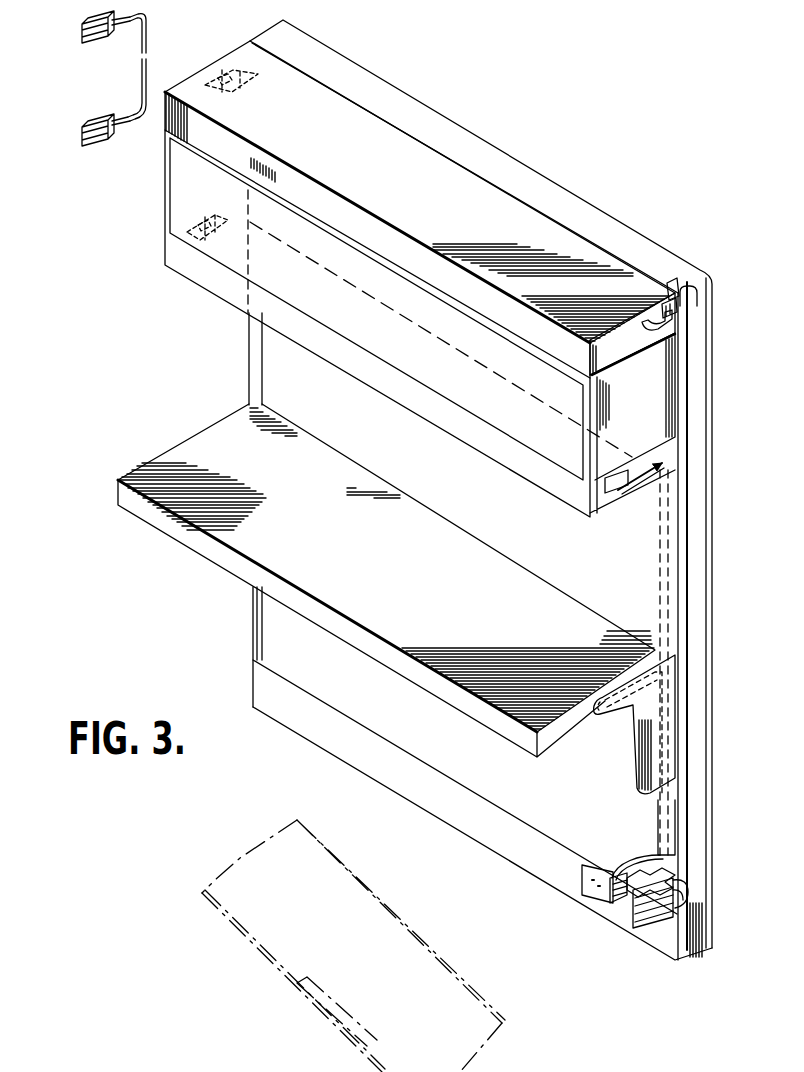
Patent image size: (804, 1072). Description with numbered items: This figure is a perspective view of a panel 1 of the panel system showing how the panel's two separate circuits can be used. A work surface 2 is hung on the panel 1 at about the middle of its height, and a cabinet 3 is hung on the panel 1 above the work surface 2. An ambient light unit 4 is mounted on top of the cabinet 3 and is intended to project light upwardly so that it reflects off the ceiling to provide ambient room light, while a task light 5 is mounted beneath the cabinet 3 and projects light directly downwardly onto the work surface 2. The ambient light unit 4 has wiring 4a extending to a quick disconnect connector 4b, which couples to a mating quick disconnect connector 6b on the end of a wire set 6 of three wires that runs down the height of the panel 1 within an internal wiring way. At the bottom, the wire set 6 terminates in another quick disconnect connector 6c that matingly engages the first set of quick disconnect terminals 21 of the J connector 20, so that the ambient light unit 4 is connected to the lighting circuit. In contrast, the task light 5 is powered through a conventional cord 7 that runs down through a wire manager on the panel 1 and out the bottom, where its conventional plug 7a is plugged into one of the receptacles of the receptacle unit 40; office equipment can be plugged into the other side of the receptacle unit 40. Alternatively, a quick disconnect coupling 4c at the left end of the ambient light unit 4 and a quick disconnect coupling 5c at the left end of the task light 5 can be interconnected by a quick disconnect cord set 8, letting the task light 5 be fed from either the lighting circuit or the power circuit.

The panel 1 is at (723, 426).
The work surface 2 is at (415, 588).
The cabinet 3 is at (643, 405).
The ambient light unit 4 is at (412, 252).
The wiring 4a is at (652, 310).
The quick disconnect connector 4b is at (632, 334).
The quick disconnect coupling 4c is at (220, 66).
The task light 5 is at (537, 468).
The quick disconnect coupling 5c is at (163, 257).
The wire set 6 is at (698, 296).
The quick disconnect connector 6b is at (679, 289).
The quick disconnect connector 6c is at (683, 890).
The cord 7 is at (636, 494).
The plug 7a is at (617, 897).
The quick disconnect cord set 8 is at (145, 12).
The J connector 20 is at (650, 915).
The quick disconnect terminals 21 is at (662, 890).
The receptacle unit 40 is at (582, 890).